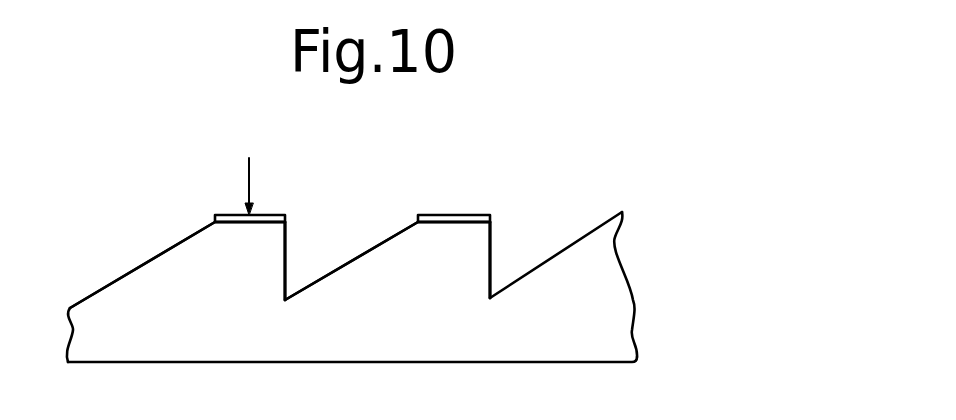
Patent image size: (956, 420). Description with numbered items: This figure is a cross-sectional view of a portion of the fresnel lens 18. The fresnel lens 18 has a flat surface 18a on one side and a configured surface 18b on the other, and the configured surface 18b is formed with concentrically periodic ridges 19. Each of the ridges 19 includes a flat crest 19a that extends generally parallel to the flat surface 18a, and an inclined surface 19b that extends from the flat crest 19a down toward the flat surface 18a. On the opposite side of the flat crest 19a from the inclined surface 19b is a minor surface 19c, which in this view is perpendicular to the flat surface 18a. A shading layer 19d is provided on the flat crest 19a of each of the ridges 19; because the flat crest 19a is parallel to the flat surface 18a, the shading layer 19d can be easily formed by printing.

The fresnel lens 18 is at (623, 303).
The flat surface 18a is at (605, 362).
The configured surface 18b is at (606, 218).
The ridges 19 is at (173, 260).
The flat crest 19a is at (270, 215).
The inclined surface 19b is at (118, 280).
The minor surface 19c is at (288, 238).
The shading layer 19d is at (223, 215).